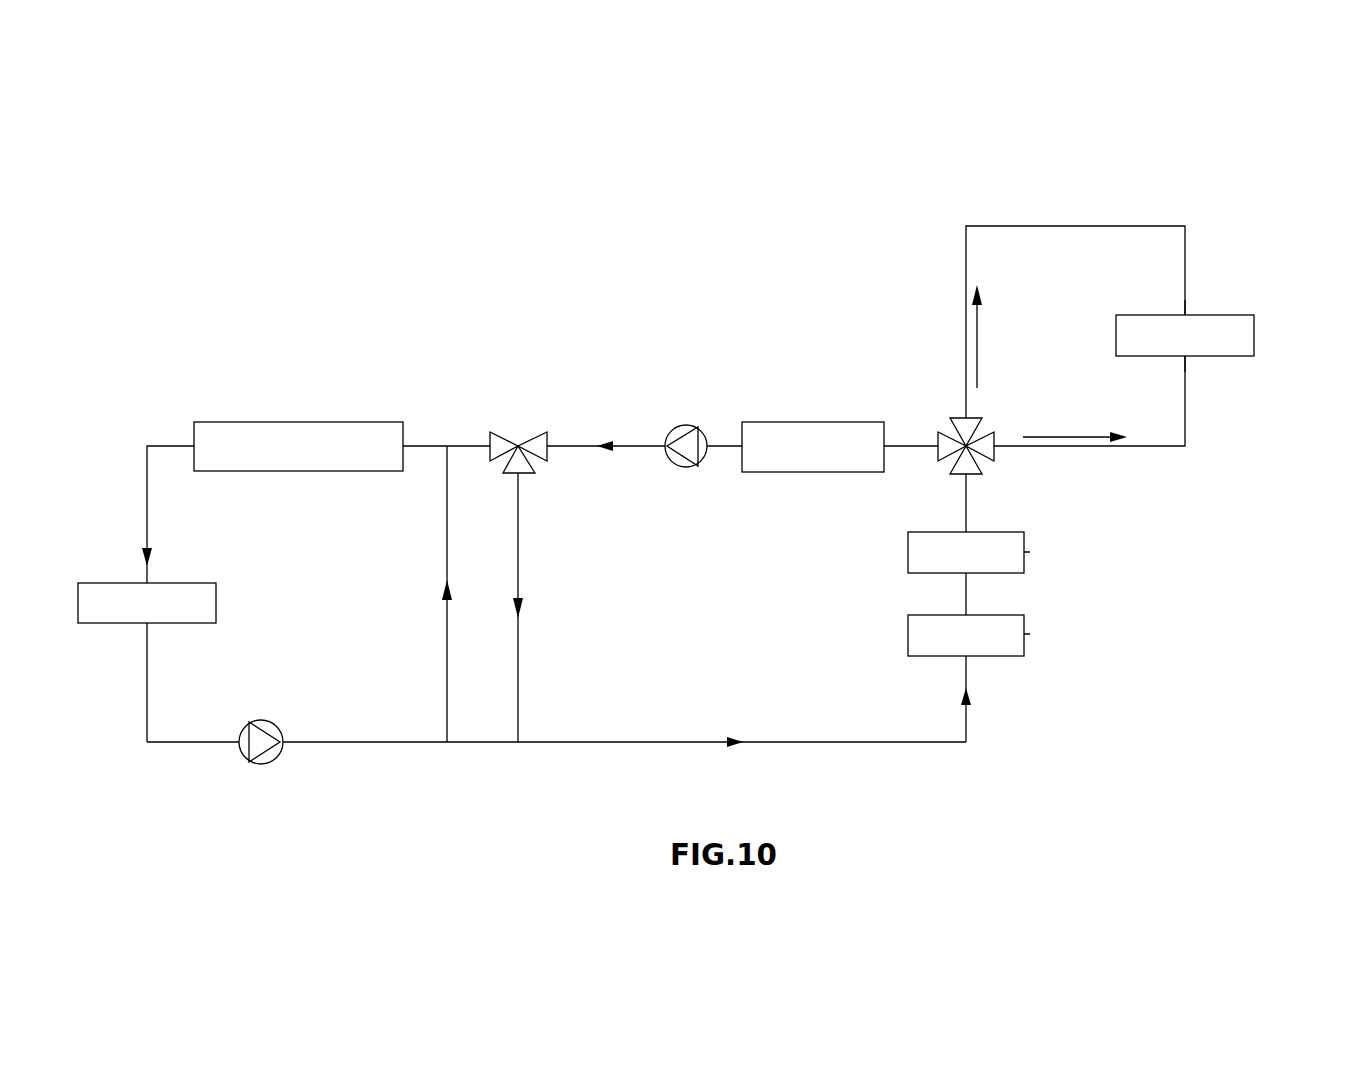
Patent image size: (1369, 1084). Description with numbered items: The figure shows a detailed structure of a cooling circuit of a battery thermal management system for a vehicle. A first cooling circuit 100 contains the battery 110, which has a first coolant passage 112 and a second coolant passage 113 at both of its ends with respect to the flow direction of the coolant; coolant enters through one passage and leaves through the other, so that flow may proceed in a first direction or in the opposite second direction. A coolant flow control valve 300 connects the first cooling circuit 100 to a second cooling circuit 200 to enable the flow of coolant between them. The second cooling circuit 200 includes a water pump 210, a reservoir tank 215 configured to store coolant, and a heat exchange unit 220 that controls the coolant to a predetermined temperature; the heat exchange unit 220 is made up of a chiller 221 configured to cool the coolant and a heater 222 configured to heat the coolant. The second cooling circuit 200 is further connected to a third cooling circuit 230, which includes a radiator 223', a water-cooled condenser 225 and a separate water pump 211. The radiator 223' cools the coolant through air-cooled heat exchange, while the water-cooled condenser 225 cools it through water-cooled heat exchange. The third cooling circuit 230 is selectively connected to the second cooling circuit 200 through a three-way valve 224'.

The first cooling circuit 100 is at (1053, 226).
The battery 110 is at (1254, 335).
The first coolant passage 112 is at (1187, 357).
The second coolant passage 113 is at (1187, 313).
The second cooling circuit 200 is at (575, 446).
The water pump 210 is at (685, 425).
The separate water pump 211 is at (243, 756).
The reservoir tank 215 is at (818, 422).
The heat exchange unit 220 is at (1127, 535).
The chiller 221 is at (1024, 551).
The heater 222 is at (1024, 633).
The radiator 223' is at (130, 556).
The three-way valve 224' is at (505, 410).
The water-cooled condenser 225 is at (322, 422).
The third cooling circuit 230 is at (157, 446).
The coolant flow control valve 300 is at (960, 448).